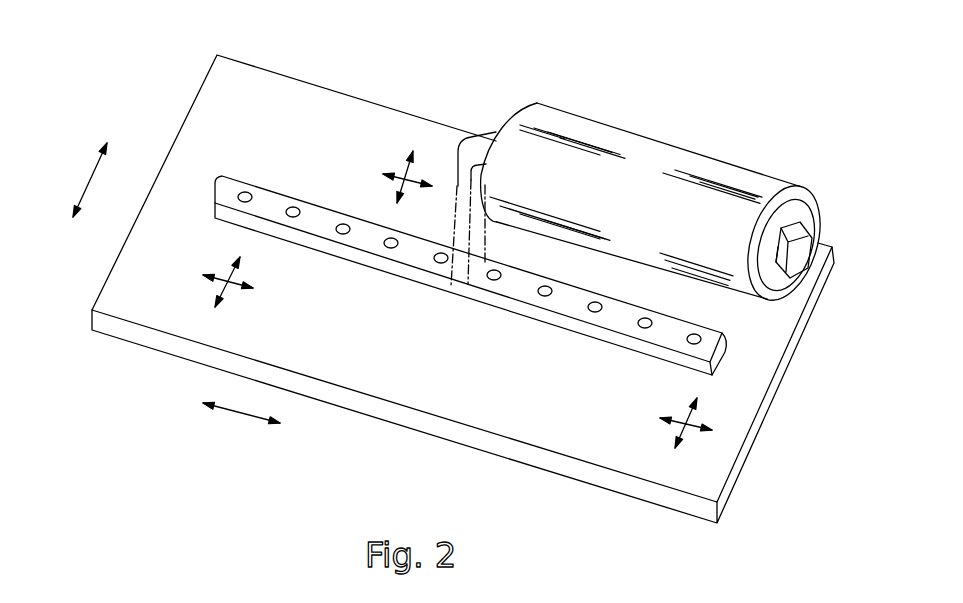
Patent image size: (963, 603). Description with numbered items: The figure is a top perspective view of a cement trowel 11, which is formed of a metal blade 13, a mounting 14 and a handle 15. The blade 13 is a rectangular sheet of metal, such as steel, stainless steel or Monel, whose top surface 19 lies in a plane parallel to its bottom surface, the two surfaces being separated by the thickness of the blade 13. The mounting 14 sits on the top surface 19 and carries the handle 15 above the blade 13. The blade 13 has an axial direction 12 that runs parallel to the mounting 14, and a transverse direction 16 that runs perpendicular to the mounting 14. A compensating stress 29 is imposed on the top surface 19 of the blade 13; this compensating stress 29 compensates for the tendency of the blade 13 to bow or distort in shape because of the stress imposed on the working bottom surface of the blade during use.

The cement trowel 11 is at (440, 94).
The axial direction 12 is at (233, 413).
The blade 13 is at (305, 95).
The mounting 14 is at (458, 266).
The handle 15 is at (638, 145).
The transverse direction 16 is at (86, 181).
The top surface 19 is at (258, 121).
The compensating stress 29 is at (408, 163).